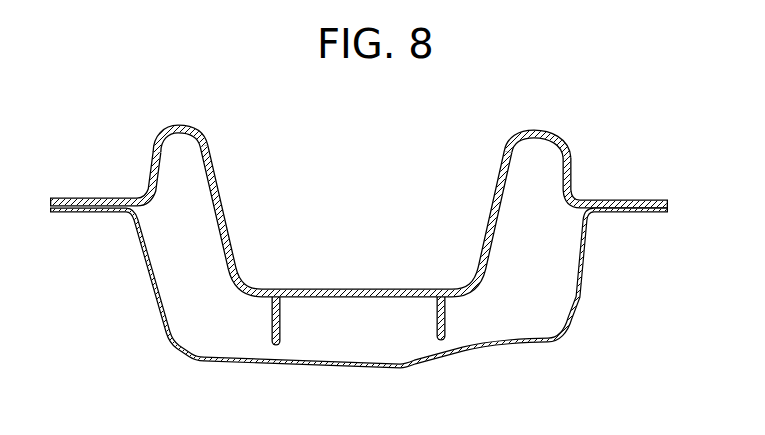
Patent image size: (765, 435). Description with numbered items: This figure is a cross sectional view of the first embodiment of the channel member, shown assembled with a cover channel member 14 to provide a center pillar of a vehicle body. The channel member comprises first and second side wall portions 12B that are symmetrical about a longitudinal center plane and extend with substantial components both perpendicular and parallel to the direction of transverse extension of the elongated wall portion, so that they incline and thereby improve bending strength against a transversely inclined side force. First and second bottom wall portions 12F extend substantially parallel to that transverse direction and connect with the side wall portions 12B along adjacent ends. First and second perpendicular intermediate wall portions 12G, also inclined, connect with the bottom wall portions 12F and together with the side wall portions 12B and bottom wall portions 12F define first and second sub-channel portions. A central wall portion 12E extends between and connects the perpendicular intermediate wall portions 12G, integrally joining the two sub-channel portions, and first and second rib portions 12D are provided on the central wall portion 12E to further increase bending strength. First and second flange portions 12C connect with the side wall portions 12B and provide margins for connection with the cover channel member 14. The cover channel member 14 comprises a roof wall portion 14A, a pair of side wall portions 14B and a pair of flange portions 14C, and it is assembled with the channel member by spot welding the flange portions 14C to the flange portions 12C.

The side wall portions 12B is at (157, 184).
The flange portions 12C is at (90, 197).
The rib portions 12D is at (270, 327).
The central wall portion 12E is at (312, 300).
The bottom wall portions 12F is at (183, 124).
The perpendicular intermediate wall portions 12G is at (234, 200).
The cover channel member 14 is at (358, 315).
The roof wall portion 14A is at (355, 369).
The side wall portions 14B is at (148, 279).
The flange portions 14C is at (68, 214).